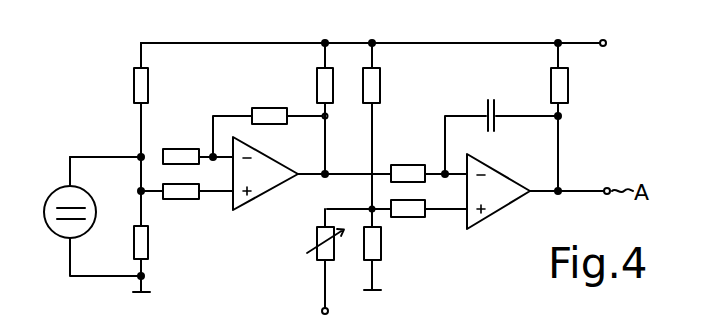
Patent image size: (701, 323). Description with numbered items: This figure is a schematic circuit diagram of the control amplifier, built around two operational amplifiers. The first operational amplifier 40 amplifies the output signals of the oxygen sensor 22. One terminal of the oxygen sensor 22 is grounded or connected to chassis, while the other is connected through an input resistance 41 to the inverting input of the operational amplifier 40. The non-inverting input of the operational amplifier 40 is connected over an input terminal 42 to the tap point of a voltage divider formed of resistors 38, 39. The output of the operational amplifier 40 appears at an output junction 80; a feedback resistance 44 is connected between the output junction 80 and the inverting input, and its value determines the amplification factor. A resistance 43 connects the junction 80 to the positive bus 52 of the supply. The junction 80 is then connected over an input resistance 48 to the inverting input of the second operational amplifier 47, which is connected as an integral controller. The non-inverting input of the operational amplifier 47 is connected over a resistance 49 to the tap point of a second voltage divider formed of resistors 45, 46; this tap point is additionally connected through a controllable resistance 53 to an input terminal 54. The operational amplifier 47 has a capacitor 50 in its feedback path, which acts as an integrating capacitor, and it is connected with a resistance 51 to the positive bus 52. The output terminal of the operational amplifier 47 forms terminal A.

The oxygen sensor 22 is at (63, 246).
The resistor 38 is at (148, 88).
The resistor 39 is at (150, 246).
The first operational amplifier 40 is at (270, 192).
The input resistance 41 is at (182, 149).
The input terminal 42 is at (185, 200).
The resistance 43 is at (317, 85).
The feedback resistance 44 is at (270, 108).
The resistor 45 is at (380, 86).
The resistor 46 is at (382, 244).
The second operational amplifier 47 is at (503, 206).
The input resistance 48 is at (408, 165).
The resistance 49 is at (414, 216).
The capacitor 50 is at (498, 108).
The resistance 51 is at (551, 80).
The positive bus 52 is at (485, 43).
The controllable resistance 53 is at (317, 261).
The input terminal 54 is at (329, 312).
The output junction 80 is at (319, 197).